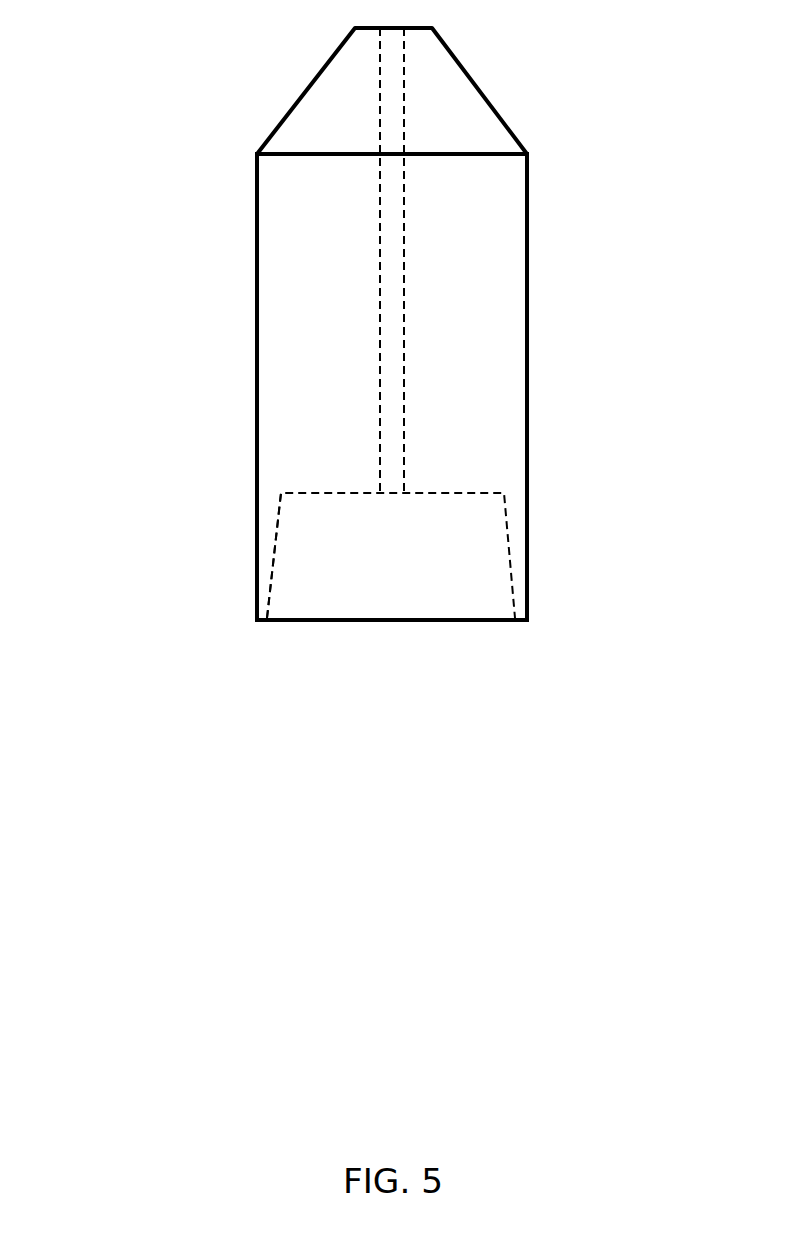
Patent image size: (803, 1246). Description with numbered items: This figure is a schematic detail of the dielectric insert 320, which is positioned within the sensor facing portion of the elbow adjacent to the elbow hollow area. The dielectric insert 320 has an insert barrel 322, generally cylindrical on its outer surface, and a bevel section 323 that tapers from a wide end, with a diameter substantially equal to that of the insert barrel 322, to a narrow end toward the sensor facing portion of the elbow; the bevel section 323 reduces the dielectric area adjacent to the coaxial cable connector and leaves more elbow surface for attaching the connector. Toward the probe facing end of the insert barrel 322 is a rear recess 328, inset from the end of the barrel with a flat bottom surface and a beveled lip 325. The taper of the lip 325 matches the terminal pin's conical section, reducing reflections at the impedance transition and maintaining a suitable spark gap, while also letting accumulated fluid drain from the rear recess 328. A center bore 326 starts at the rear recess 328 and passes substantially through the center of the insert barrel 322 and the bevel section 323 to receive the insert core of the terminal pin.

The dielectric insert 320 is at (132, 372).
The insert barrel 322 is at (508, 374).
The bevel section 323 is at (463, 112).
The beveled lip 325 is at (517, 543).
The center bore 326 is at (405, 294).
The rear recess 328 is at (273, 563).